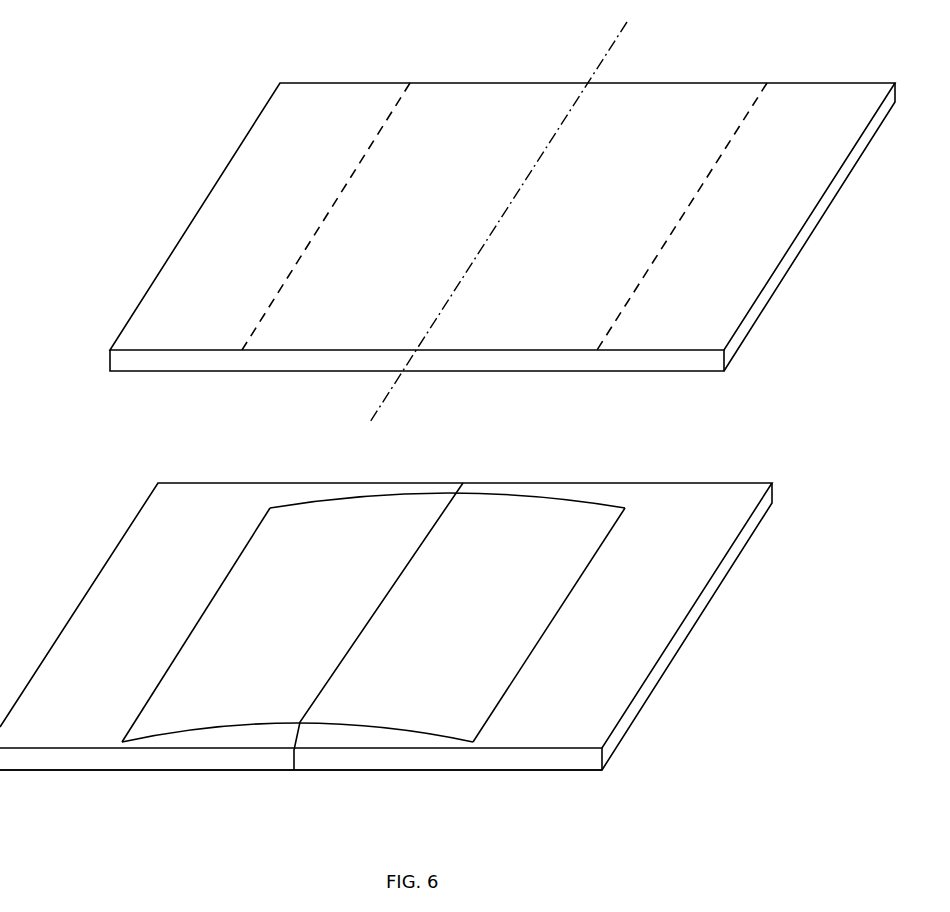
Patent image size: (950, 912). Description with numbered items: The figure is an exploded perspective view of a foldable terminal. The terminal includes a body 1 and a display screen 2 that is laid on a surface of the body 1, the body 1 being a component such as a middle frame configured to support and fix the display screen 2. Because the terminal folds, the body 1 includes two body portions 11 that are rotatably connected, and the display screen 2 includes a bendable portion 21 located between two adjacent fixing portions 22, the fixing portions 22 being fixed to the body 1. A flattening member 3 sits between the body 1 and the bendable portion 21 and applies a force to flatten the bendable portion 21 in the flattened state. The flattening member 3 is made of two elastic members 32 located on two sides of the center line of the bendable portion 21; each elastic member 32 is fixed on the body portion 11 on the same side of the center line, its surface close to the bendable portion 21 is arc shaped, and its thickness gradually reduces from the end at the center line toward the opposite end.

The body 1 is at (693, 652).
The body portion 11 is at (85, 758).
The display screen 2 is at (841, 248).
The bendable portion 21 is at (520, 98).
The fixing portion 22 is at (334, 98).
The flattening member 3 is at (373, 668).
The elastic member 32 is at (367, 808).